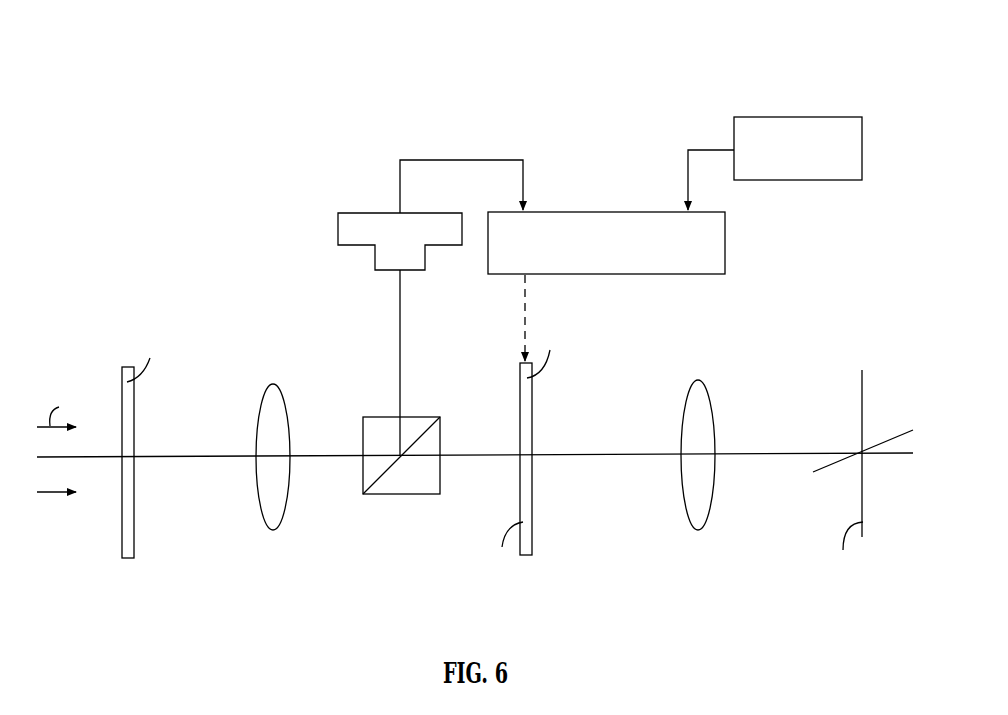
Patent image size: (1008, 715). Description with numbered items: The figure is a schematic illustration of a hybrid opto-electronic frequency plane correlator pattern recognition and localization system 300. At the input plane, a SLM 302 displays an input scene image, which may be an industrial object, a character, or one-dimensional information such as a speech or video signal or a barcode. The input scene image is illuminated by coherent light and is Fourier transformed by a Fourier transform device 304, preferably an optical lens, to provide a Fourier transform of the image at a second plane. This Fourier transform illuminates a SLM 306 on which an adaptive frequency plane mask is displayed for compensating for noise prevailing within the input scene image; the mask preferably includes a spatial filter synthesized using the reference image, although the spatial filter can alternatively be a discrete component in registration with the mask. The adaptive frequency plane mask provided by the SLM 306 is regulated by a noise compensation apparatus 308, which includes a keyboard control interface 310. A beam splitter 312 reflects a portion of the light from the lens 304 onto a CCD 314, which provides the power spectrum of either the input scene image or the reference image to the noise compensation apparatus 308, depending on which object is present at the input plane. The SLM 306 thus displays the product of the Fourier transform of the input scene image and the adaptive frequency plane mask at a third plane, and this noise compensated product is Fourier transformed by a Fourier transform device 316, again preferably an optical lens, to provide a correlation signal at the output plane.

The hybrid opto-electronic frequency plane correlator pattern recognition and locali 300 is at (850, 41).
The SLM 302 is at (128, 547).
The Fourier transform device 304 is at (272, 510).
The SLM 306 is at (527, 542).
The noise compensation apparatus 308 is at (700, 266).
The keyboard control interface 310 is at (853, 173).
The beam splitter 312 is at (370, 432).
The CCD 314 is at (353, 218).
The Fourier transform device 316 is at (700, 513).